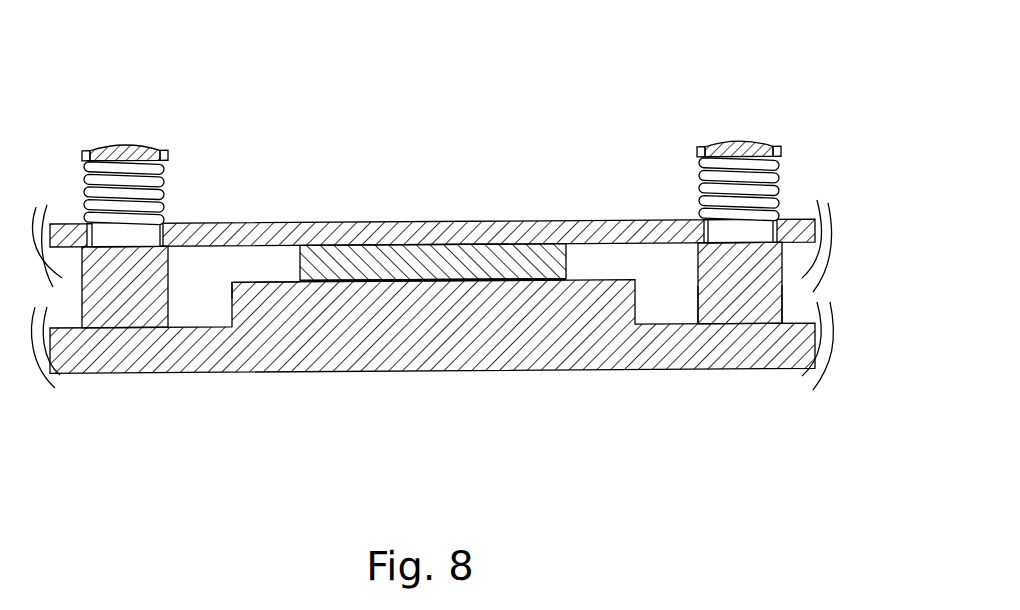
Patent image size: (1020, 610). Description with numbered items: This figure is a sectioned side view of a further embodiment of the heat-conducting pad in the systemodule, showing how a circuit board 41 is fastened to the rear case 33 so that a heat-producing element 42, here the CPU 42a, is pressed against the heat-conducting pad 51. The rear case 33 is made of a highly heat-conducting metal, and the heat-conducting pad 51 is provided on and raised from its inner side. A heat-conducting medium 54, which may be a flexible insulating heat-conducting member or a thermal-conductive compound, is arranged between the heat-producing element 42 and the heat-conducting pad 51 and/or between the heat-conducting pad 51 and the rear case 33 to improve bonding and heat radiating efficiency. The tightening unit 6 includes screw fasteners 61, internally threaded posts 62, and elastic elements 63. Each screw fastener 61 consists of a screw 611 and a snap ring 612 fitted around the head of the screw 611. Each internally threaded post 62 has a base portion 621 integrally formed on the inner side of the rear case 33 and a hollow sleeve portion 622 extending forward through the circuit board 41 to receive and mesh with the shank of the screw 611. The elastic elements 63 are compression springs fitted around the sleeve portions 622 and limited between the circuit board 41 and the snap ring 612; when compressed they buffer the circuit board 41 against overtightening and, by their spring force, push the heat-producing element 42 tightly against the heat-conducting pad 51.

The tightening unit 6 is at (123, 142).
The screw fastener 61 is at (725, 111).
The screw 611 is at (733, 150).
The snap ring 612 is at (700, 150).
The elastic element 63 is at (713, 177).
The internally threaded post 62 is at (754, 331).
The base portion 621 is at (757, 316).
The hollow sleeve portion 622 is at (740, 236).
The circuit board 41 is at (477, 235).
The heat-producing element 42 is at (428, 200).
The CPU 42a is at (433, 280).
The heat-conducting medium 54 is at (297, 279).
The heat-conducting pad 51 is at (395, 309).
The rear case 33 is at (193, 363).